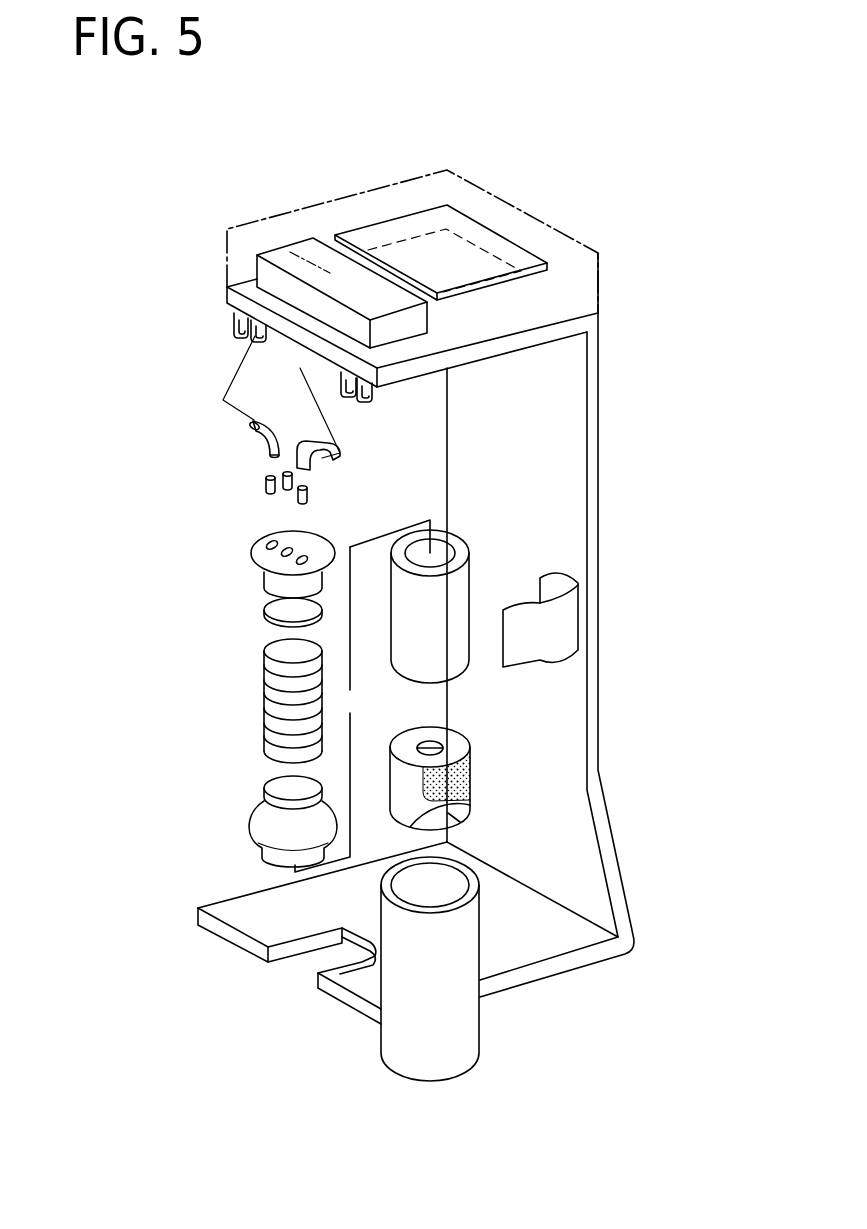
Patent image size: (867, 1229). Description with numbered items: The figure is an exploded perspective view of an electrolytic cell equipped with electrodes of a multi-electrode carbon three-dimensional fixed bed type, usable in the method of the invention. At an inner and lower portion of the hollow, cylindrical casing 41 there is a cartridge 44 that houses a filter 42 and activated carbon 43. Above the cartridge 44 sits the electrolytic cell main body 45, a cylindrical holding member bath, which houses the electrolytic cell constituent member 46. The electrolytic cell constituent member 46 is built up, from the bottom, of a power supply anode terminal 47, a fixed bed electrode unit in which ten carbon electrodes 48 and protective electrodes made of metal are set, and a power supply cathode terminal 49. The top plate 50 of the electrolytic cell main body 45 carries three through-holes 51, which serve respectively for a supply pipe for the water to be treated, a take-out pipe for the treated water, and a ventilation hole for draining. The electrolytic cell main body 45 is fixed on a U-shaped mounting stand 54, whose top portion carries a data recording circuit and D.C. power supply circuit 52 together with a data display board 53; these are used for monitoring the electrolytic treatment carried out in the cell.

The casing 41 is at (483, 1040).
The filter 42 is at (467, 823).
The activated carbon 43 is at (455, 780).
The cartridge 44 is at (470, 743).
The electrolytic cell main body 45 is at (470, 567).
The electrolytic cell constituent member 46 is at (258, 737).
The power supply anode terminal 47 is at (265, 790).
The carbon electrodes 48 is at (263, 717).
The power supply cathode terminal 49 is at (265, 613).
The top plate 50 is at (270, 541).
The through-holes 51 is at (332, 525).
The data recording circuit and D.C. power supply circuit 52 is at (467, 213).
The data display board 53 is at (265, 273).
The U-shaped mounting stand 54 is at (600, 455).